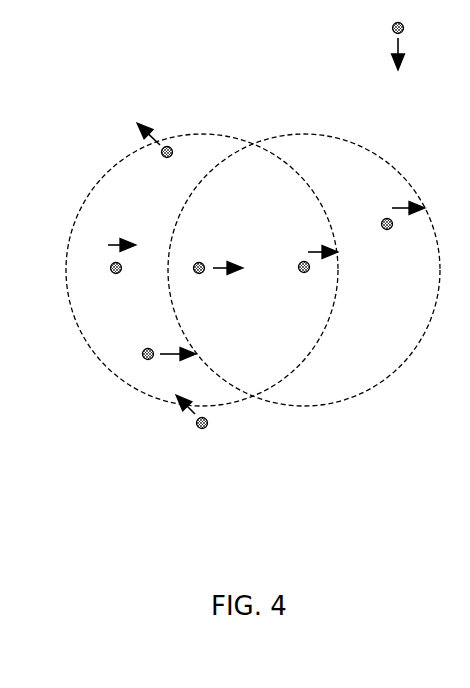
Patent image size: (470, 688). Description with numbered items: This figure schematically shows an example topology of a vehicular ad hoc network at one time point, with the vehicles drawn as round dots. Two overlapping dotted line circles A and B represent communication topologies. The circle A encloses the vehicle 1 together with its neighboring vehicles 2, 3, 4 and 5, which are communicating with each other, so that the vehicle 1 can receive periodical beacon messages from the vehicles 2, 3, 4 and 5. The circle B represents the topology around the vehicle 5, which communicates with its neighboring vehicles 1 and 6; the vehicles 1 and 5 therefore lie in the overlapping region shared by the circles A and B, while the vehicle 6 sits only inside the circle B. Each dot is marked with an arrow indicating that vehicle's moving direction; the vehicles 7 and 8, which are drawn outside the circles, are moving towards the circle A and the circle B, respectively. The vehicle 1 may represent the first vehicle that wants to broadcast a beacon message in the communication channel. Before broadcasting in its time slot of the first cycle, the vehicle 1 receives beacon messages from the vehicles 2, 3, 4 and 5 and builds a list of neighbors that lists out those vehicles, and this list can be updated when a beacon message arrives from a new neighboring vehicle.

The dotted line circle A is at (202, 137).
The dotted line circle B is at (373, 153).
The vehicle 1 is at (219, 258).
The vehicle 2 is at (155, 146).
The vehicle 3 is at (115, 259).
The vehicle 4 is at (170, 347).
The vehicle 5 is at (315, 256).
The vehicle 6 is at (404, 219).
The vehicle 7 is at (199, 422).
The vehicle 8 is at (407, 47).